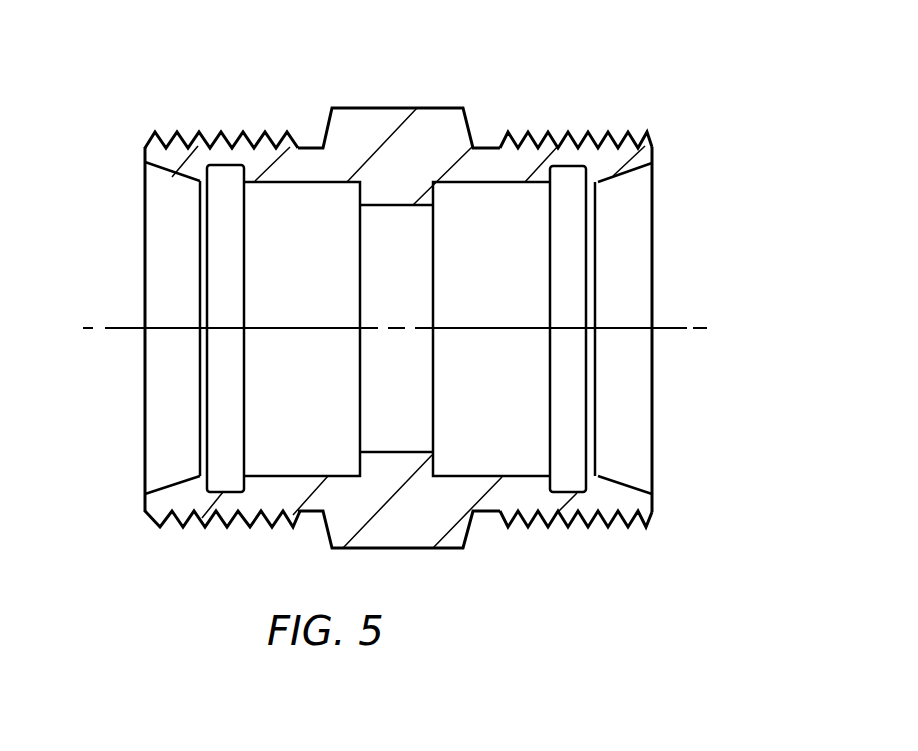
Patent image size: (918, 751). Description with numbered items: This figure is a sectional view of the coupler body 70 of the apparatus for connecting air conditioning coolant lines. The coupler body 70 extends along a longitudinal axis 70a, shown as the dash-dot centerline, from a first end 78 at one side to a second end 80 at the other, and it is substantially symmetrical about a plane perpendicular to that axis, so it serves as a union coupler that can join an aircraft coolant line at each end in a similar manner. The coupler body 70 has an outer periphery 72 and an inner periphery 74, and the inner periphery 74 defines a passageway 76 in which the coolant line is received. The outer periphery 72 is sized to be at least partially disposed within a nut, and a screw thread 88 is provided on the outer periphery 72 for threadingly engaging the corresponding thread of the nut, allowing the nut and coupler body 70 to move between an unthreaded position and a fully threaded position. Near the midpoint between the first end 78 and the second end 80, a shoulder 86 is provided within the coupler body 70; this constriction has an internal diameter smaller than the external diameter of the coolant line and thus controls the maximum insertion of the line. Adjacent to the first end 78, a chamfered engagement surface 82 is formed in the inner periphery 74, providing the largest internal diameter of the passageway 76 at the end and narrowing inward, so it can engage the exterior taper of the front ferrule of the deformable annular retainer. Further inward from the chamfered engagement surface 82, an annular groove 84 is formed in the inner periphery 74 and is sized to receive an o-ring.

The coupler body 70 is at (512, 107).
The longitudinal axis 70a is at (278, 333).
The outer periphery 72 is at (312, 140).
The inner periphery 74 is at (525, 183).
The passageway 76 is at (396, 328).
The first end 78 is at (143, 247).
The second end 80 is at (655, 297).
The chamfered engagement surface 82 is at (185, 181).
The annular groove 84 is at (220, 388).
The shoulder 86 is at (357, 192).
The screw thread 88 is at (146, 132).